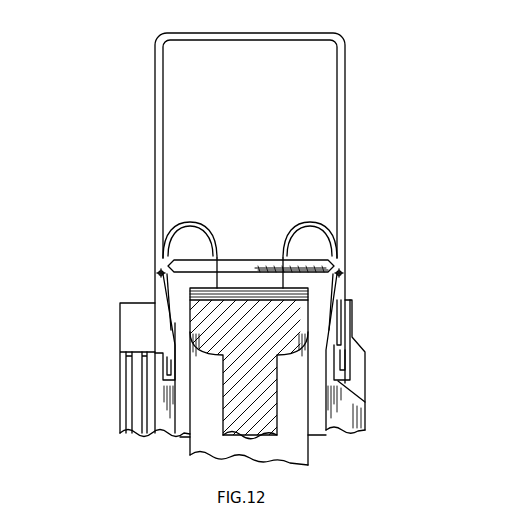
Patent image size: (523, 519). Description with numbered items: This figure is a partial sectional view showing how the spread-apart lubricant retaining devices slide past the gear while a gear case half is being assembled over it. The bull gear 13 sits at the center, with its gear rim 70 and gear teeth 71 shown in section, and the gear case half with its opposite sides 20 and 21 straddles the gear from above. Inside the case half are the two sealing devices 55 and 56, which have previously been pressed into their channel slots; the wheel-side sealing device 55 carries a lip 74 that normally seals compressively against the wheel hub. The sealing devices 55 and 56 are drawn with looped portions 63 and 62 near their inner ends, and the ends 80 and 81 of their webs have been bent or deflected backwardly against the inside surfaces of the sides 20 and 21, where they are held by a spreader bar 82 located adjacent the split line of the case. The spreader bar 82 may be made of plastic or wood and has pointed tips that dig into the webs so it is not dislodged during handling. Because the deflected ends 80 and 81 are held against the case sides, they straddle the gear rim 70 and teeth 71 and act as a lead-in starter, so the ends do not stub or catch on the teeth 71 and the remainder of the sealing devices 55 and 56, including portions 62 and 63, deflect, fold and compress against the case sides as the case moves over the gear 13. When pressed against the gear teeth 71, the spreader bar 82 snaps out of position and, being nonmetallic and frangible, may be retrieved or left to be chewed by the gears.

The bull gear 13 is at (244, 337).
The side 20 is at (343, 100).
The side 21 is at (157, 98).
The wheel-side sealing device 55 is at (303, 208).
The sealing device 56 is at (196, 208).
The right arch leg 62 is at (296, 244).
The left arch leg 63 is at (210, 245).
The gear rim 70 is at (307, 303).
The gear teeth 71 is at (188, 299).
The lip 74 is at (354, 393).
The end of web 80 is at (341, 273).
The end of web 81 is at (158, 273).
The spreader bar 82 is at (250, 260).